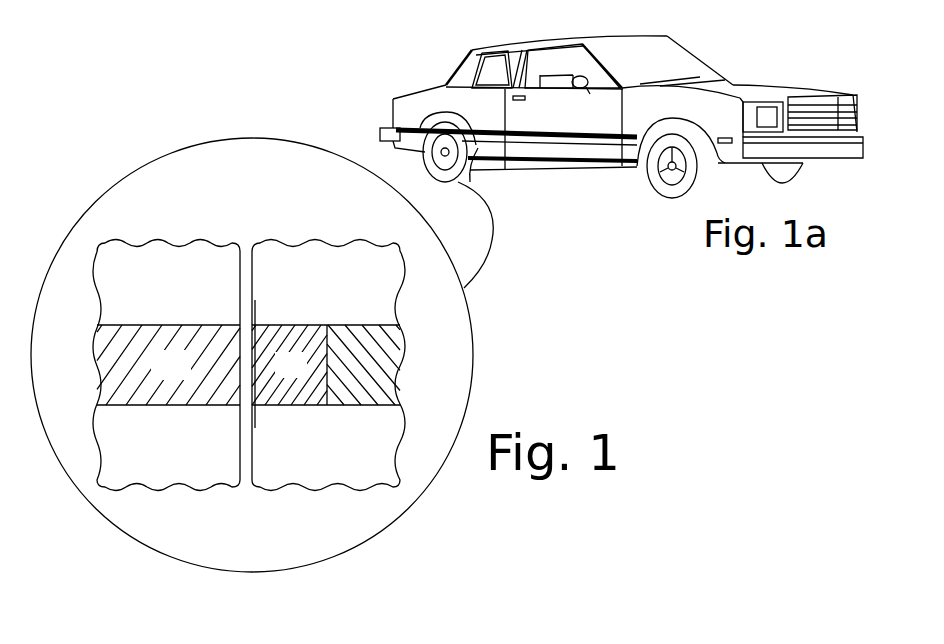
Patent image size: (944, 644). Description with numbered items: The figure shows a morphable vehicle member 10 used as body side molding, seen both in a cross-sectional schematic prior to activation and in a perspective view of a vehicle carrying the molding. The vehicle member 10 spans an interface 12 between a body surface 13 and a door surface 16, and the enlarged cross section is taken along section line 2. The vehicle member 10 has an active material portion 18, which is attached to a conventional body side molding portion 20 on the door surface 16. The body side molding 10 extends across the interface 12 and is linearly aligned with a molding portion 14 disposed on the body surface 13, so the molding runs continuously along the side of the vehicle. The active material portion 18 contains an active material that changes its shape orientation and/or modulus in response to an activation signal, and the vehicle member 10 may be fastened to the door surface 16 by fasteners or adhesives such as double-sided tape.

In FIG. 1, the morphable vehicle member 10 is at (150, 192).
In FIG. 1A, the morphable vehicle member 10 is at (508, 158).
In FIG. 1, the interface 12 is at (248, 236).
In FIG. 1, the body surface 13 is at (182, 280).
In FIG. 1A, the body surface 13 is at (496, 116).
In FIG. 1, the molding portion 14 is at (182, 377).
In FIG. 1, the door surface 16 is at (303, 279).
In FIG. 1A, the door surface 16 is at (579, 115).
In FIG. 1, the active material portion 18 is at (303, 377).
In FIG. 1, the conventional body side molding portion 20 is at (345, 418).
In FIG. 1, the section line 2 is at (276, 428).